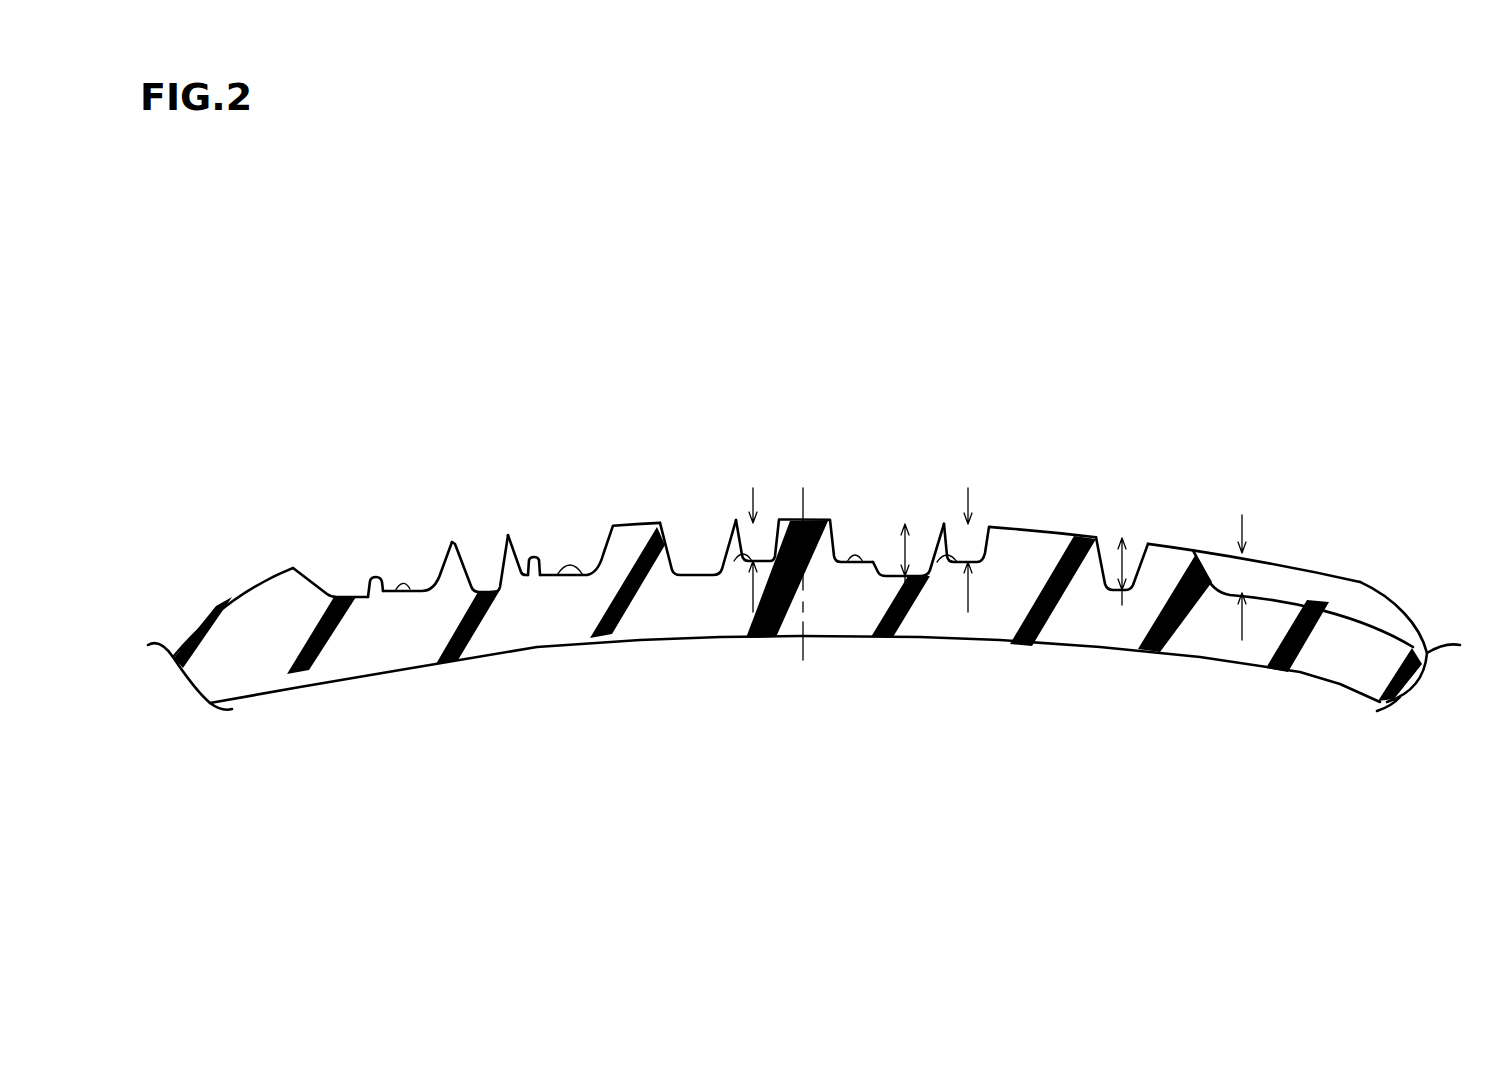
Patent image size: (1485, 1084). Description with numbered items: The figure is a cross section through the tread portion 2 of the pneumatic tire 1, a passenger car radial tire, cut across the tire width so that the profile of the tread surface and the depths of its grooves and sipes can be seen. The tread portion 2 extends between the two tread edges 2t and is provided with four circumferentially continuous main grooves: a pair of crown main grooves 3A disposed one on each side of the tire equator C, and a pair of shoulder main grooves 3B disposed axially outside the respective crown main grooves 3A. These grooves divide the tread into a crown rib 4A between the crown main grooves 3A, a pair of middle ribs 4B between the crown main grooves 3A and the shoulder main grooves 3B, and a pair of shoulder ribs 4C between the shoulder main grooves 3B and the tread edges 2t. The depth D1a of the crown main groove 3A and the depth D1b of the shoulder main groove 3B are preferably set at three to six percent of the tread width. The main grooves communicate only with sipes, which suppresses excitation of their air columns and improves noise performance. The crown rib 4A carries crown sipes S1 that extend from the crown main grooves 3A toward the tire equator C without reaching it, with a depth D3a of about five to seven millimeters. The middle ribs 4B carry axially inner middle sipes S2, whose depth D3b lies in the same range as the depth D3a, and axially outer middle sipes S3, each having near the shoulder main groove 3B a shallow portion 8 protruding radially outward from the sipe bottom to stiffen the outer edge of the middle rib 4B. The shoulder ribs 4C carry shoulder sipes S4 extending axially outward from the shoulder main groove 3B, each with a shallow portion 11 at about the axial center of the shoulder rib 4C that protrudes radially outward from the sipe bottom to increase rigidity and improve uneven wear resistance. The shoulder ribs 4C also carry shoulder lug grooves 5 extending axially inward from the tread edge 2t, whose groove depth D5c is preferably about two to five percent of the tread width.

The pneumatic tire 1 is at (1299, 406).
The tread portion 2 is at (1173, 435).
The tread edge 2t is at (241, 596).
The crown main groove 3A is at (705, 555).
The shoulder main groove 3B is at (482, 562).
The crown rib 4A is at (786, 519).
The middle rib 4B is at (604, 523).
The shoulder rib 4C is at (390, 543).
The shoulder lug groove 5 is at (1302, 600).
The shallow portion 8 is at (532, 573).
The shallow portion 11 is at (379, 594).
The tire equator C is at (802, 561).
The depth of crown sipe D3a is at (754, 605).
The depth of crown main groove D1a is at (905, 600).
The depth of axially inner middle sipe D3b is at (968, 605).
The depth of shoulder main groove D1b is at (1122, 560).
The groove depth of shoulder lug groove D5c is at (1242, 605).
The crown sipe S1 is at (734, 561).
The axially inner middle sipe S2 is at (937, 562).
The axially outer middle sipe S3 is at (557, 575).
The shoulder sipe S4 is at (410, 589).